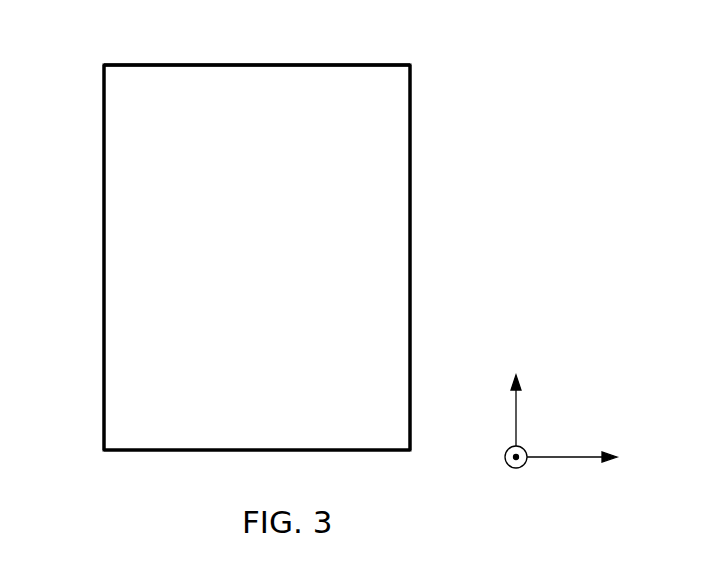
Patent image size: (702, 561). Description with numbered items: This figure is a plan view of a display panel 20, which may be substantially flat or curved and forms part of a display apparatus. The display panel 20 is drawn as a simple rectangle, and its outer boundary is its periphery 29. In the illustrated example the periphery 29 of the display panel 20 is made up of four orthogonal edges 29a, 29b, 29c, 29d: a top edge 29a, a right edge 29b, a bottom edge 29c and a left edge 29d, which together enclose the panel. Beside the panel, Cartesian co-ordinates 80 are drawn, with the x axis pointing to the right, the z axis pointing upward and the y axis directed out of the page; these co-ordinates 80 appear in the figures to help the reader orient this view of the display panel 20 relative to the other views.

The display panel 20 is at (375, 212).
The periphery 29 is at (379, 63).
The edge 29a is at (285, 63).
The edge 29b is at (411, 325).
The edge 29c is at (357, 452).
The edge 29d is at (103, 214).
The Cartesian co-ordinates 80 is at (556, 475).